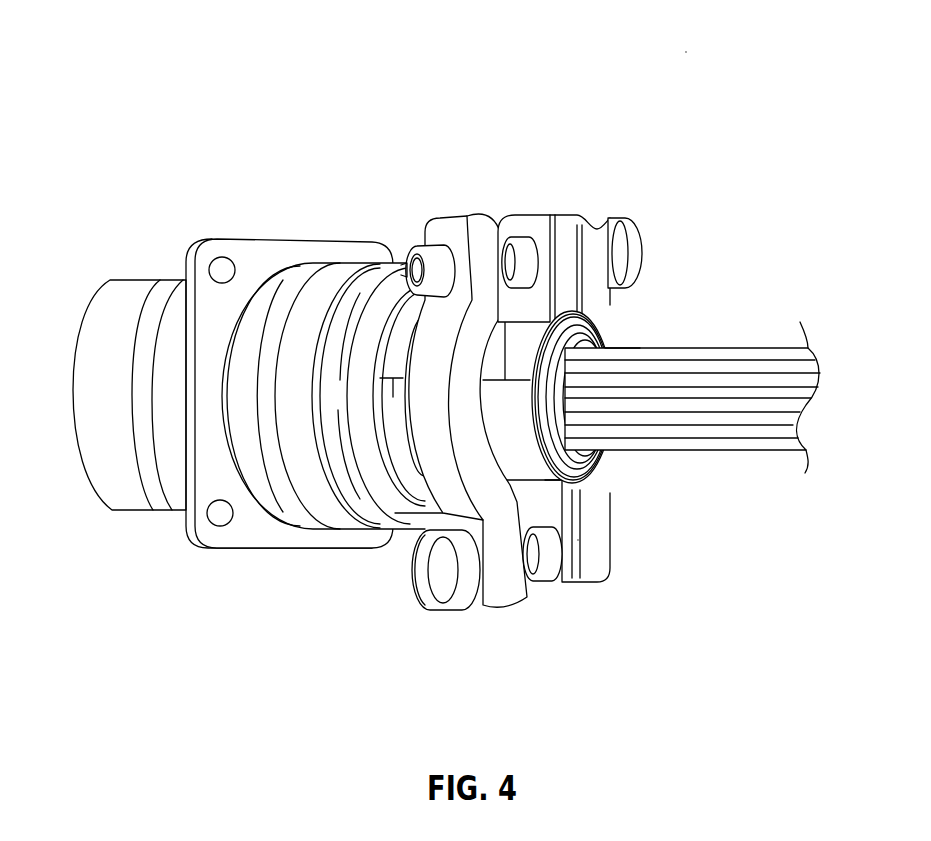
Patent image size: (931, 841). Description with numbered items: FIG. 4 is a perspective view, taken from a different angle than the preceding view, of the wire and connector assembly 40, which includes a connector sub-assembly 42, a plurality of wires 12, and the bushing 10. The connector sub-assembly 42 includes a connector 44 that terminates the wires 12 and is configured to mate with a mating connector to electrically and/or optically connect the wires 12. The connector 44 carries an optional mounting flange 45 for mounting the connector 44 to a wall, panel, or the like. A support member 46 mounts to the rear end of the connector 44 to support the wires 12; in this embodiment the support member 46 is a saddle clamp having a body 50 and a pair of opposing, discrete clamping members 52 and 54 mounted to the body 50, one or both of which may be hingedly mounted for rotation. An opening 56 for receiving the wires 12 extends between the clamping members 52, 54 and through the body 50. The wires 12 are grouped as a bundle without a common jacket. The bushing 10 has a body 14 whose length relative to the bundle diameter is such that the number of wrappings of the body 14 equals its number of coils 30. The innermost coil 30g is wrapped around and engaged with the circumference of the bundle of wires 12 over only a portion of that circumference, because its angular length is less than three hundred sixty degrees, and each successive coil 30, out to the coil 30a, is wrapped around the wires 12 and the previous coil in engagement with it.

The wire and connector assembly 40 is at (679, 58).
The connector 44 is at (140, 268).
The mounting flange 45 is at (213, 483).
The connector sub-assembly 42 is at (367, 264).
The body 50 is at (357, 433).
The support member 46 is at (365, 484).
The clamping member 54 is at (591, 223).
The opening 56 is at (497, 337).
The coils 30 is at (606, 318).
The coil 30a is at (594, 484).
The innermost coil 30g is at (598, 330).
The wires 12 is at (775, 347).
The clamping member 52 is at (475, 419).
The body 14 is at (513, 446).
The bushing 10 is at (577, 527).